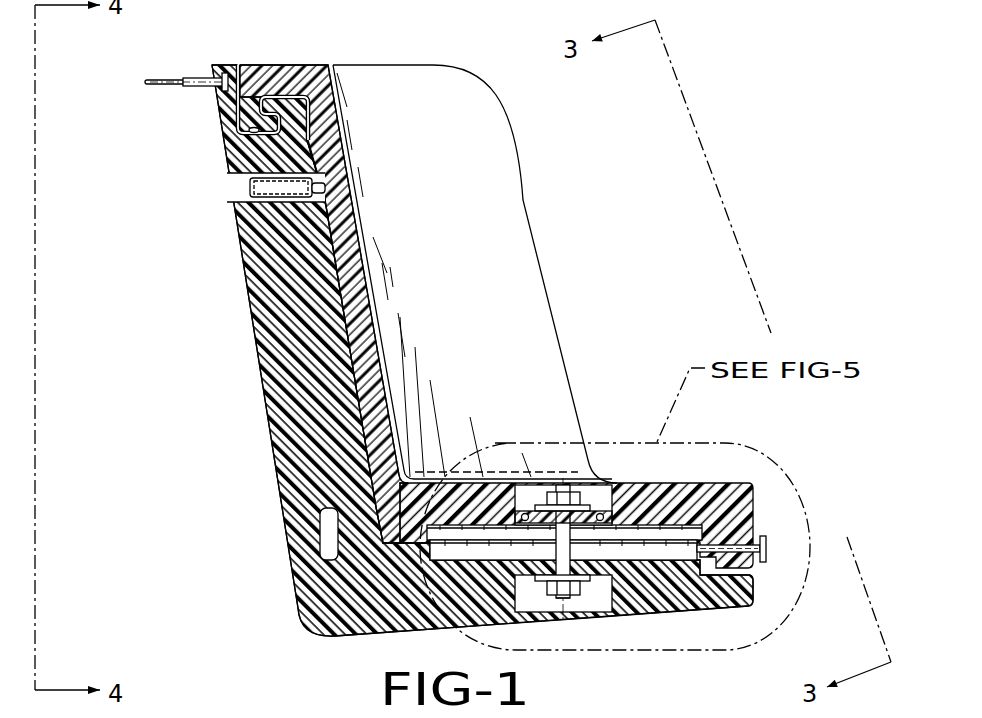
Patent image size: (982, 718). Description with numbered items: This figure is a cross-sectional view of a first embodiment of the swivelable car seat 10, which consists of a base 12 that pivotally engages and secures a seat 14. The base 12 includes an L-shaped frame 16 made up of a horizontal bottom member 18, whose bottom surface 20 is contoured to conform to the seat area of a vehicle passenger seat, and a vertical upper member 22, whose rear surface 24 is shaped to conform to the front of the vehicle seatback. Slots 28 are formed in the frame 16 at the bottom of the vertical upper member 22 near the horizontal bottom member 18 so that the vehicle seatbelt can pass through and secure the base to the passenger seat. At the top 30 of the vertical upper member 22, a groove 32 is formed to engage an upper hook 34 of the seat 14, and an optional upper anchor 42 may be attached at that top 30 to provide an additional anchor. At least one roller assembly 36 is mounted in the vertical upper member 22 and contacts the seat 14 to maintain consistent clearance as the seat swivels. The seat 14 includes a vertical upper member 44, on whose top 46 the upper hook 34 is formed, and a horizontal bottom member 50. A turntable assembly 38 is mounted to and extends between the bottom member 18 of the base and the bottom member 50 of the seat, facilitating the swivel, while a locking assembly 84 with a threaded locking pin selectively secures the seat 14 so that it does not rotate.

The swivelable car seat 10 is at (600, 240).
The base 12 is at (248, 345).
The seat 14 is at (373, 300).
The L-shaped frame 16 is at (268, 430).
The horizontal bottom member 18 is at (347, 607).
The bottom surface 20 is at (722, 607).
The vertical upper member 22 is at (245, 240).
The rear surface 24 is at (247, 298).
The slots 28 is at (325, 540).
The top 30 is at (213, 104).
The groove 32 is at (262, 131).
The upper hook 34 is at (246, 100).
The roller assembly 36 is at (250, 190).
The turntable assembly 38 is at (652, 563).
The upper anchor 42 is at (178, 80).
The vertical upper member 44 is at (343, 238).
The top 46 is at (305, 95).
The horizontal bottom member 50 is at (688, 500).
The locking assembly 84 is at (777, 528).